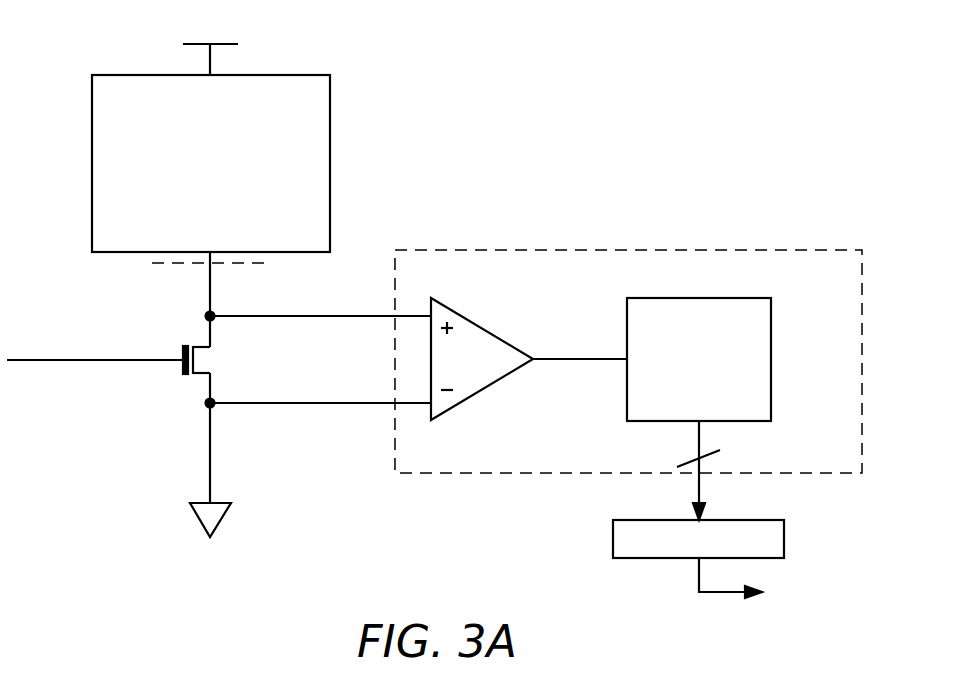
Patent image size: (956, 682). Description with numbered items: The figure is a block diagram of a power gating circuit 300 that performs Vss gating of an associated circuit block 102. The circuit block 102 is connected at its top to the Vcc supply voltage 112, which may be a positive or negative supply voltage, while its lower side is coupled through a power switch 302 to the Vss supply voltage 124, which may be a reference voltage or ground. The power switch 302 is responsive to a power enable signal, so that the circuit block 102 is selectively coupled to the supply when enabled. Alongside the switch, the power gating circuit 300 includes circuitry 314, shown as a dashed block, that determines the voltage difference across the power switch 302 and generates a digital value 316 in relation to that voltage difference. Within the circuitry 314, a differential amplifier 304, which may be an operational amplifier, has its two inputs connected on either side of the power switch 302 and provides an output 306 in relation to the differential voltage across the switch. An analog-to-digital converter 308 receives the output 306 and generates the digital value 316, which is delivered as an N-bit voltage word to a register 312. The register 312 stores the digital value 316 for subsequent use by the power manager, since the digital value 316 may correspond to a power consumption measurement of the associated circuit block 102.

The circuit block 102 is at (97, 74).
The Vcc supply voltage 112 is at (198, 44).
The power switch 302 is at (212, 348).
The Vss supply voltage 124 is at (222, 522).
The circuitry 314 is at (421, 250).
The differential amplifier 304 is at (478, 327).
The output 306 is at (580, 361).
The analog-to-digital converter 308 is at (755, 298).
The digital value 316 is at (697, 442).
The register 312 is at (785, 539).
The power gating circuit 300 is at (727, 66).